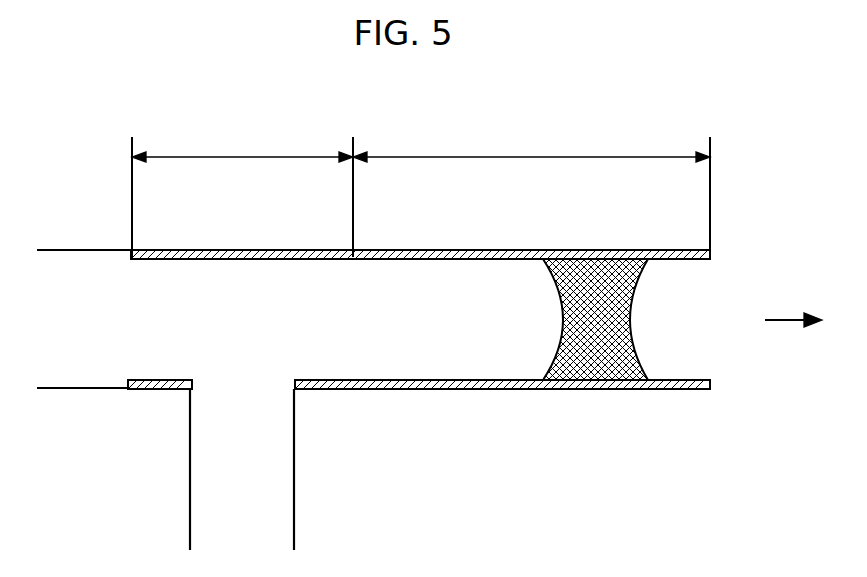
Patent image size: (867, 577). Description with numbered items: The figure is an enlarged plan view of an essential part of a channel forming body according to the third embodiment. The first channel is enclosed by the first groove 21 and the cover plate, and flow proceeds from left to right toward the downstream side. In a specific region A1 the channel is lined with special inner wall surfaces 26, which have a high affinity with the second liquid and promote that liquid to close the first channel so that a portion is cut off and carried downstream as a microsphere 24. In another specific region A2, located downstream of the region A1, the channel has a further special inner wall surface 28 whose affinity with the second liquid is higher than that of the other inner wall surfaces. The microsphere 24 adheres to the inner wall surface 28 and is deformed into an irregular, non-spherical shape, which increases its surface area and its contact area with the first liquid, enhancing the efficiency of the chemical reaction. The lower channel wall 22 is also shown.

The first groove 21 is at (72, 277).
The lower substrate 22 is at (205, 477).
The microsphere 24 is at (600, 258).
The special inner wall surfaces 26 is at (330, 261).
The special inner wall surface 28 is at (428, 379).
The specific region A1 is at (242, 189).
The specific region A2 is at (531, 186).